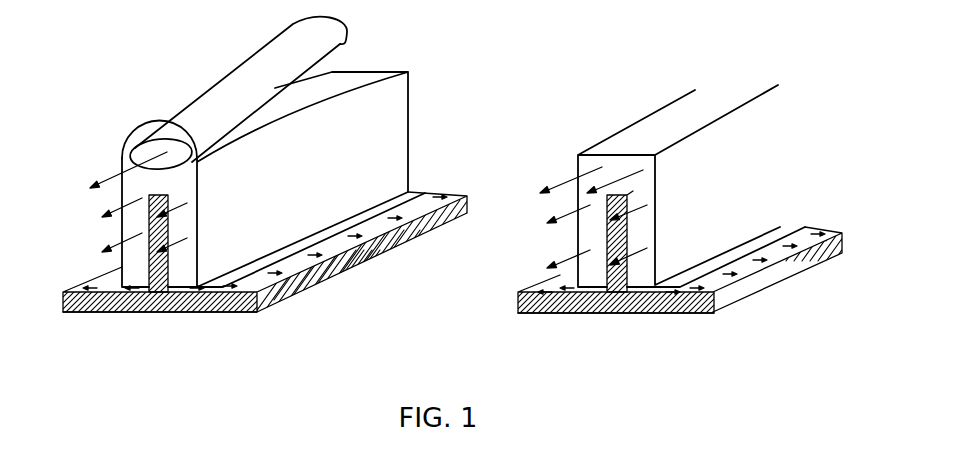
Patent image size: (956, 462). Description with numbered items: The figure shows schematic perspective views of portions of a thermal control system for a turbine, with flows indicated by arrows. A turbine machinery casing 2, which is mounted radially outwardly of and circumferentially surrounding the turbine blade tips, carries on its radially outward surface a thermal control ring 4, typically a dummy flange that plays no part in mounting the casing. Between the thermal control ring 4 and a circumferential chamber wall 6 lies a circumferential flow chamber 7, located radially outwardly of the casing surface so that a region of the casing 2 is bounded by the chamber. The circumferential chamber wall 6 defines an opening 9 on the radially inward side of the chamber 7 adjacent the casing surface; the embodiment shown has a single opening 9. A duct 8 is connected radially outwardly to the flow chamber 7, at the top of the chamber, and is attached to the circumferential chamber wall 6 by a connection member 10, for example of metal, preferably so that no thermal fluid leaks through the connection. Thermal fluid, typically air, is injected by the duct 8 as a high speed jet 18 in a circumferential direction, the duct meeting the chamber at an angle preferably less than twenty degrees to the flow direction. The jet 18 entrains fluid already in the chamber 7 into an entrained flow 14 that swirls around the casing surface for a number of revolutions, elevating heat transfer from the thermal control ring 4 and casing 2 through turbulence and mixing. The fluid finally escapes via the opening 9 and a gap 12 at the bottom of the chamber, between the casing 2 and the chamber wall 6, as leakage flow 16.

The turbine machinery casing 2 is at (210, 311).
The thermal control ring 4 is at (183, 222).
The circumferential chamber wall 6 is at (409, 72).
The circumferential flow chamber 7 is at (180, 258).
The duct 8 is at (282, 68).
The opening 9 is at (168, 311).
The connection member 10 is at (193, 125).
The gap 12 is at (113, 292).
The entrained flow 14 is at (121, 175).
The leakage flow 16 is at (100, 286).
The high speed jet 18 is at (134, 158).